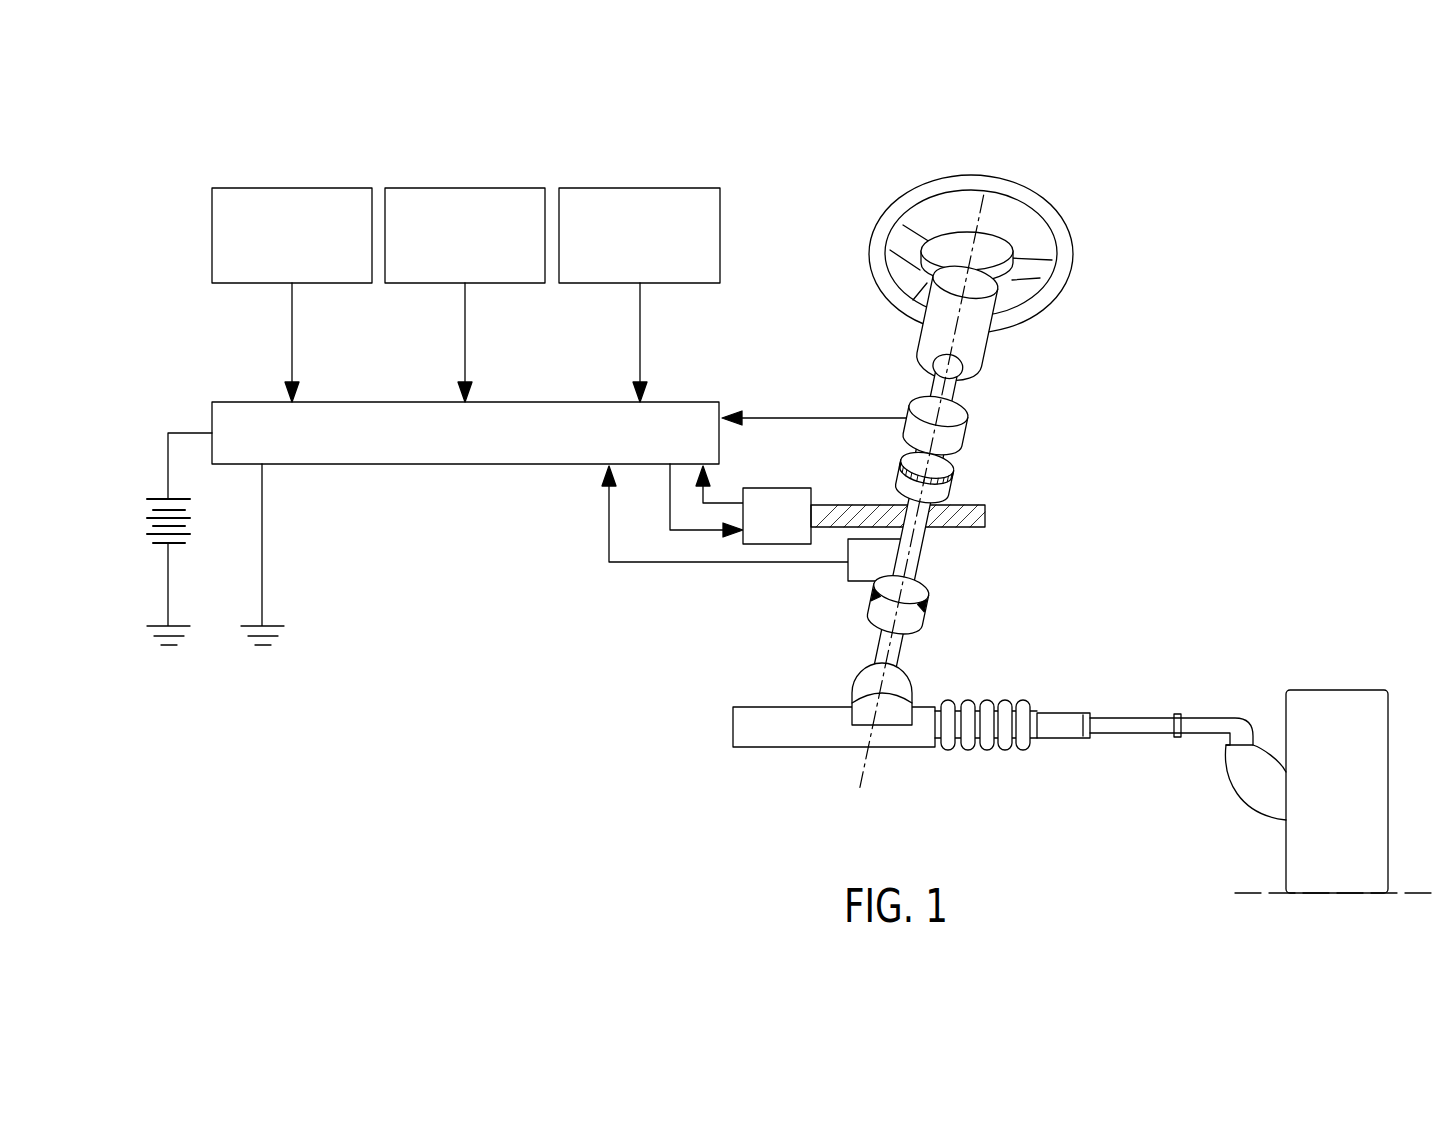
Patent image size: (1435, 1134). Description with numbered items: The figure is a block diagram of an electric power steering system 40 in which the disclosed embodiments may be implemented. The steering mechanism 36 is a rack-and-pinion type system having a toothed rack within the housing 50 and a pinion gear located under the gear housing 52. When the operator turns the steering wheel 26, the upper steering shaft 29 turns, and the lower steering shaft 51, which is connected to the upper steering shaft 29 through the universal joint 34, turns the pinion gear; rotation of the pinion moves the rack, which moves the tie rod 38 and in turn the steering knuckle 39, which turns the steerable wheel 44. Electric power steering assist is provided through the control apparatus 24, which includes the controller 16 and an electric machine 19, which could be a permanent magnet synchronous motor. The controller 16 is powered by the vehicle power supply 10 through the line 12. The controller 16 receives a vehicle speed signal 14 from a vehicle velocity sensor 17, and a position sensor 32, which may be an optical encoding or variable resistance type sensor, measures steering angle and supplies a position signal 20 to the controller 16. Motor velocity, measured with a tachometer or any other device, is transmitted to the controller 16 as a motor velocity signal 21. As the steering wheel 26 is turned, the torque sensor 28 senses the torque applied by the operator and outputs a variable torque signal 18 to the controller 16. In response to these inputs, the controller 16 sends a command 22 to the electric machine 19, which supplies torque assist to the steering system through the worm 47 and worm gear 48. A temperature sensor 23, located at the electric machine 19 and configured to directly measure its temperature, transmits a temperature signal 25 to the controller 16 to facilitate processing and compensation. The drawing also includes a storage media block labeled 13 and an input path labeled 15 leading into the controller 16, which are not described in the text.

The vehicle power supply 10 is at (152, 528).
The line 12 is at (183, 433).
The storage media 13 is at (292, 188).
The vehicle speed signal 14 is at (465, 320).
The storage media signal 15 is at (292, 320).
The controller 16 is at (432, 465).
The vehicle velocity sensor 17 is at (465, 188).
The torque signal 18 is at (826, 418).
The electric machine 19 is at (790, 488).
The position signal 20 is at (737, 562).
The motor velocity signal 21 is at (730, 503).
The command 22 is at (688, 530).
The temperature sensor 23 is at (640, 188).
The control apparatus 24 is at (1158, 406).
The temperature signal 25 is at (640, 320).
The steering wheel 26 is at (1028, 212).
The torque sensor 28 is at (962, 422).
The upper steering shaft 29 is at (932, 388).
The position sensor 32 is at (848, 573).
The universal joint 34 is at (922, 612).
The steering mechanism 36 is at (1005, 700).
The tie rod 38 is at (1126, 725).
The steering knuckle 39 is at (1252, 780).
The electric power steering system 40 is at (1239, 506).
The steerable wheel 44 is at (1323, 705).
The worm 47 is at (975, 520).
The worm gear 48 is at (940, 478).
The housing 50 is at (773, 738).
The lower steering shaft 51 is at (900, 662).
The gear housing 52 is at (857, 685).